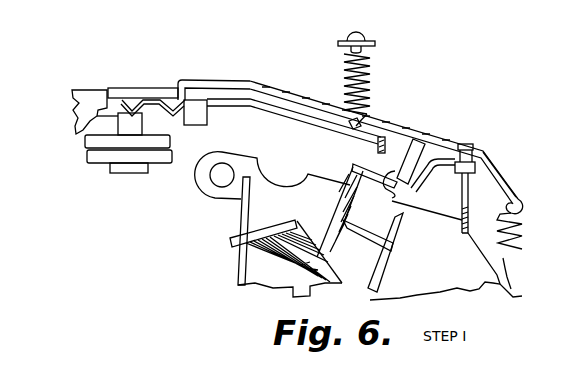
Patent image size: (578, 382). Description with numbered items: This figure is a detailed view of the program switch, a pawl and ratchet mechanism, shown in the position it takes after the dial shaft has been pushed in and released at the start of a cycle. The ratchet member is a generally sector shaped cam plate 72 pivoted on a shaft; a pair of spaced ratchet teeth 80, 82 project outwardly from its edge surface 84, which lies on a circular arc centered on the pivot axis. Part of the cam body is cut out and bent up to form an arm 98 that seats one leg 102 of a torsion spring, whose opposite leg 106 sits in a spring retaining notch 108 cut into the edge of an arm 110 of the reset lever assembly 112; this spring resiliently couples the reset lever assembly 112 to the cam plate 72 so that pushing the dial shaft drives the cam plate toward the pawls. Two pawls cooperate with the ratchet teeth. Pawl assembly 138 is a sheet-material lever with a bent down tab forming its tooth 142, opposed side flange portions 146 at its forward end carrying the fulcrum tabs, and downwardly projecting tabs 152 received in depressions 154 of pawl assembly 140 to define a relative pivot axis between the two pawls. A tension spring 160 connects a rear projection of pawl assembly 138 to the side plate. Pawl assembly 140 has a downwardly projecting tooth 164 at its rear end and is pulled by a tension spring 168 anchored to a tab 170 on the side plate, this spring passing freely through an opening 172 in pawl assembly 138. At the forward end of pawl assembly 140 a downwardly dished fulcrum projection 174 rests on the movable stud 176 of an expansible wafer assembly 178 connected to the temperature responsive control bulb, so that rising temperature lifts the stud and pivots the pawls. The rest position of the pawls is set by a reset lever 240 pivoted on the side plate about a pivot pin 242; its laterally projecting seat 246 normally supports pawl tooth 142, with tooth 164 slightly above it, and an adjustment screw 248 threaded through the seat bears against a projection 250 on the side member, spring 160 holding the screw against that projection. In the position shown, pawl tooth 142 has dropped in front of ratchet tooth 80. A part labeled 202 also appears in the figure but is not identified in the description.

The cam plate 72 is at (487, 287).
The ratchet tooth 80 is at (422, 173).
The ratchet tooth 82 is at (470, 223).
The edge surface 84 is at (504, 259).
The arm 98 is at (350, 221).
The torsion spring leg 102 is at (399, 229).
The torsion spring leg 106 is at (242, 213).
The spring retaining notch 108 is at (254, 233).
The arm 110 is at (291, 220).
The reset lever assembly 112 is at (269, 270).
The pawl assembly 138 is at (405, 124).
The pawl assembly 140 is at (292, 111).
The pawl tooth 142 is at (408, 166).
The side flange portions 146 is at (152, 90).
The tabs 152 is at (180, 88).
The depressions 154 is at (180, 125).
The tension spring 160 is at (522, 235).
The pawl tooth 164 is at (378, 146).
The tension spring 168 is at (368, 84).
The tab 170 is at (338, 44).
The opening 172 is at (375, 126).
The fulcrum projection 174 is at (132, 101).
The movable stud 176 is at (123, 127).
The expansible wafer assembly 178 is at (95, 157).
The torn bracket 202 is at (72, 106).
The reset lever 240 is at (290, 190).
The pivot pin 242 is at (210, 175).
The bracket tooth seat portion 246 is at (392, 190).
The adjustment screw 248 is at (472, 148).
The projection 250 is at (473, 183).